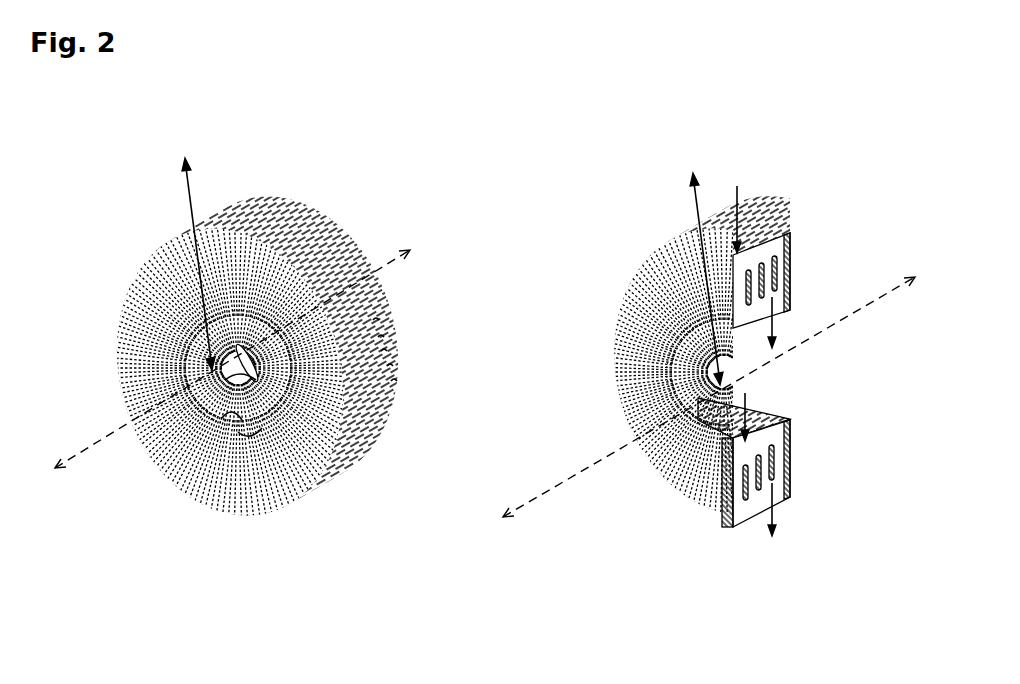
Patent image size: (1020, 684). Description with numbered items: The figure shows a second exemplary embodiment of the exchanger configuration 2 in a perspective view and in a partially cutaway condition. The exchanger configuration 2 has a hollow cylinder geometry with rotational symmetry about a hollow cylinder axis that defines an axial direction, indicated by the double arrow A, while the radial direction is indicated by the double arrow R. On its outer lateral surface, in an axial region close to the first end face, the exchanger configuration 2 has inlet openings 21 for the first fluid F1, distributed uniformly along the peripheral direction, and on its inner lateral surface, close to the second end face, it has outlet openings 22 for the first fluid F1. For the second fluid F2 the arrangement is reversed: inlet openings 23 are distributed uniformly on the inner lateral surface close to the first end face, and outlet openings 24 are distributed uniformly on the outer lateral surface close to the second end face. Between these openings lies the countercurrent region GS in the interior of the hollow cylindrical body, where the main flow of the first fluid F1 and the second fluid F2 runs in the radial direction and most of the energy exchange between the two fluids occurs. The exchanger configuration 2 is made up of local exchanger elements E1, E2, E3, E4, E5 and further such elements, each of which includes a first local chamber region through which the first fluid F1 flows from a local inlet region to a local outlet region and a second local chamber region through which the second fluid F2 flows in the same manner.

The exchanger configuration 2 is at (484, 393).
The inlet openings 21 is at (273, 278).
The outlet openings 22 is at (248, 380).
The inlet openings 23 is at (222, 415).
The outlet openings 24 is at (306, 268).
The radial direction R is at (448, 261).
The axial direction A is at (485, 377).
The local exchanger element E1 is at (373, 320).
The local exchanger element E2 is at (378, 337).
The local exchanger element E3 is at (381, 351).
The local exchanger element E4 is at (387, 366).
The local exchanger element E5 is at (391, 381).
The first fluid F1 is at (772, 253).
The second fluid F2 is at (776, 460).
The countercurrent region GS is at (780, 245).